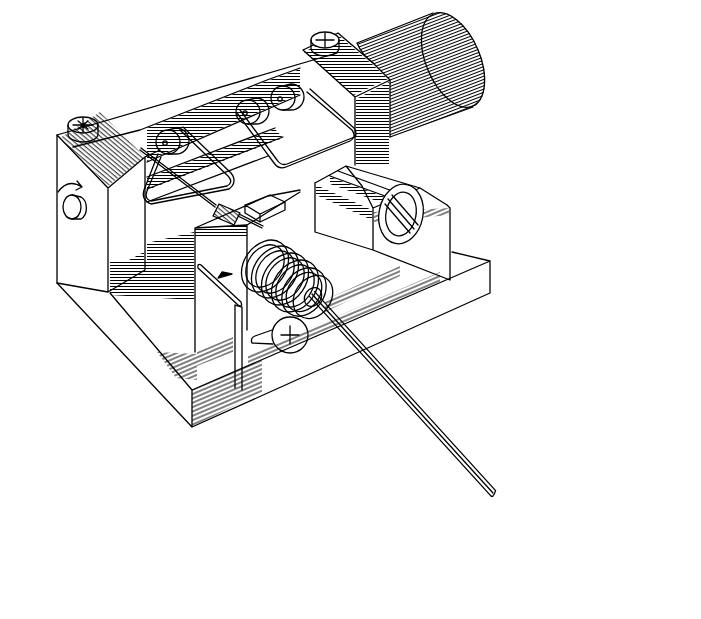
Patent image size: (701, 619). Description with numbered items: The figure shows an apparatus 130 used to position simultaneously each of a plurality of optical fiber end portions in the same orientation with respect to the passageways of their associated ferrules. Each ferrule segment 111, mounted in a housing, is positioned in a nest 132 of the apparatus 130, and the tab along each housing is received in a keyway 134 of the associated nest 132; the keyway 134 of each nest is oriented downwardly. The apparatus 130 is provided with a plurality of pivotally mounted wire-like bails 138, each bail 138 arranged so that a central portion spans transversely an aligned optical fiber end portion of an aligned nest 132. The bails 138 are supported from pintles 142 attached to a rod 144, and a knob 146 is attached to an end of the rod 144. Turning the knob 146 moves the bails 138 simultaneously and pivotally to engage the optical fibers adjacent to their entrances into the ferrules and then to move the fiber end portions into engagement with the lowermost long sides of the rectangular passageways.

The apparatus 130 is at (165, 57).
The knob 146 is at (466, 69).
The rod 144 is at (262, 108).
The pintles 142 is at (178, 115).
The nest 132 is at (417, 193).
The keyway 134 is at (405, 235).
The bail 138 is at (205, 211).
The ferrule segment 111 is at (227, 206).